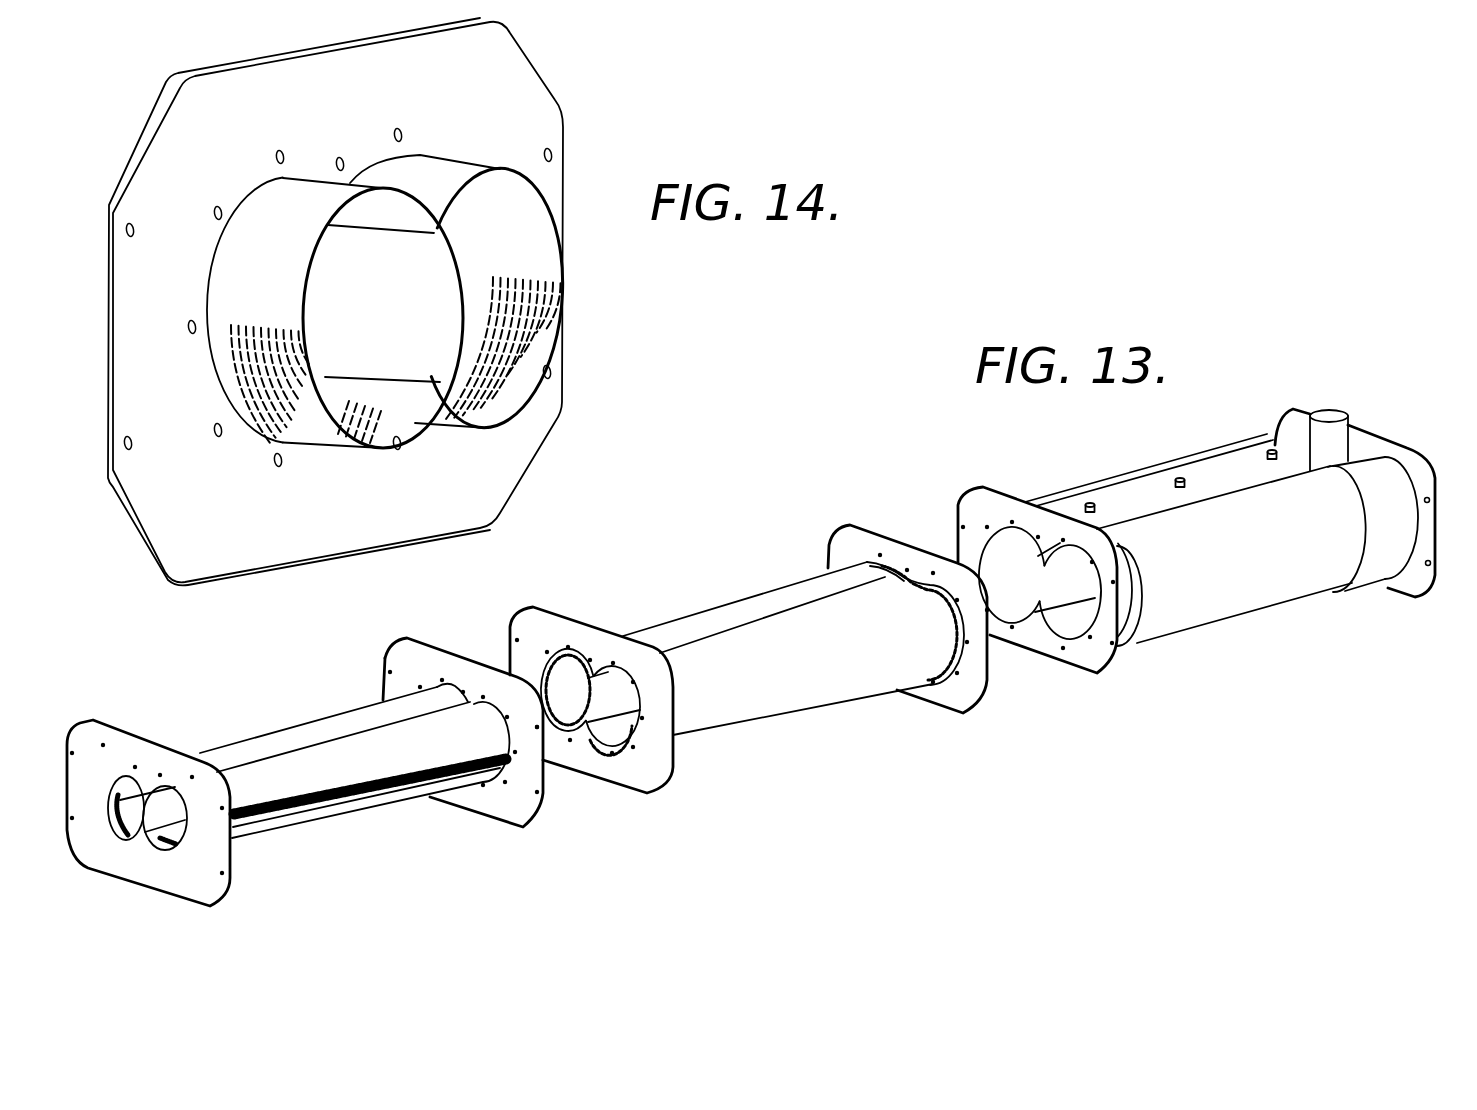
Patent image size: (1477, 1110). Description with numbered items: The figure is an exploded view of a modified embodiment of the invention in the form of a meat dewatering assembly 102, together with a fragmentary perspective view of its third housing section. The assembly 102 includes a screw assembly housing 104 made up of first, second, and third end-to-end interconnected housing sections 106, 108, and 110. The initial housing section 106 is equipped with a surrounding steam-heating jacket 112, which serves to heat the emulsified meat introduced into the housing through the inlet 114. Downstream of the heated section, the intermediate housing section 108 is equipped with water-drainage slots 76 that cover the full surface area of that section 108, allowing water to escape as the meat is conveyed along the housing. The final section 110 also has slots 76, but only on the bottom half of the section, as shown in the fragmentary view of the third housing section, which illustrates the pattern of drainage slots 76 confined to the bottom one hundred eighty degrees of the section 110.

In FIG. 14, the water-drainage slots 76 is at (550, 305).
In FIG. 13, the water-drainage slots 76 is at (422, 782).
In FIG. 13, the meat dewatering assembly 102 is at (1196, 481).
In FIG. 13, the screw assembly housing 104 is at (748, 611).
In FIG. 13, the initial housing section 106 is at (1382, 557).
In FIG. 13, the intermediate housing section 108 is at (800, 690).
In FIG. 14, the final housing section 110 is at (371, 437).
In FIG. 13, the final housing section 110 is at (333, 777).
In FIG. 13, the steam-heating jacket 112 is at (1220, 592).
In FIG. 13, the inlet 114 is at (1332, 414).